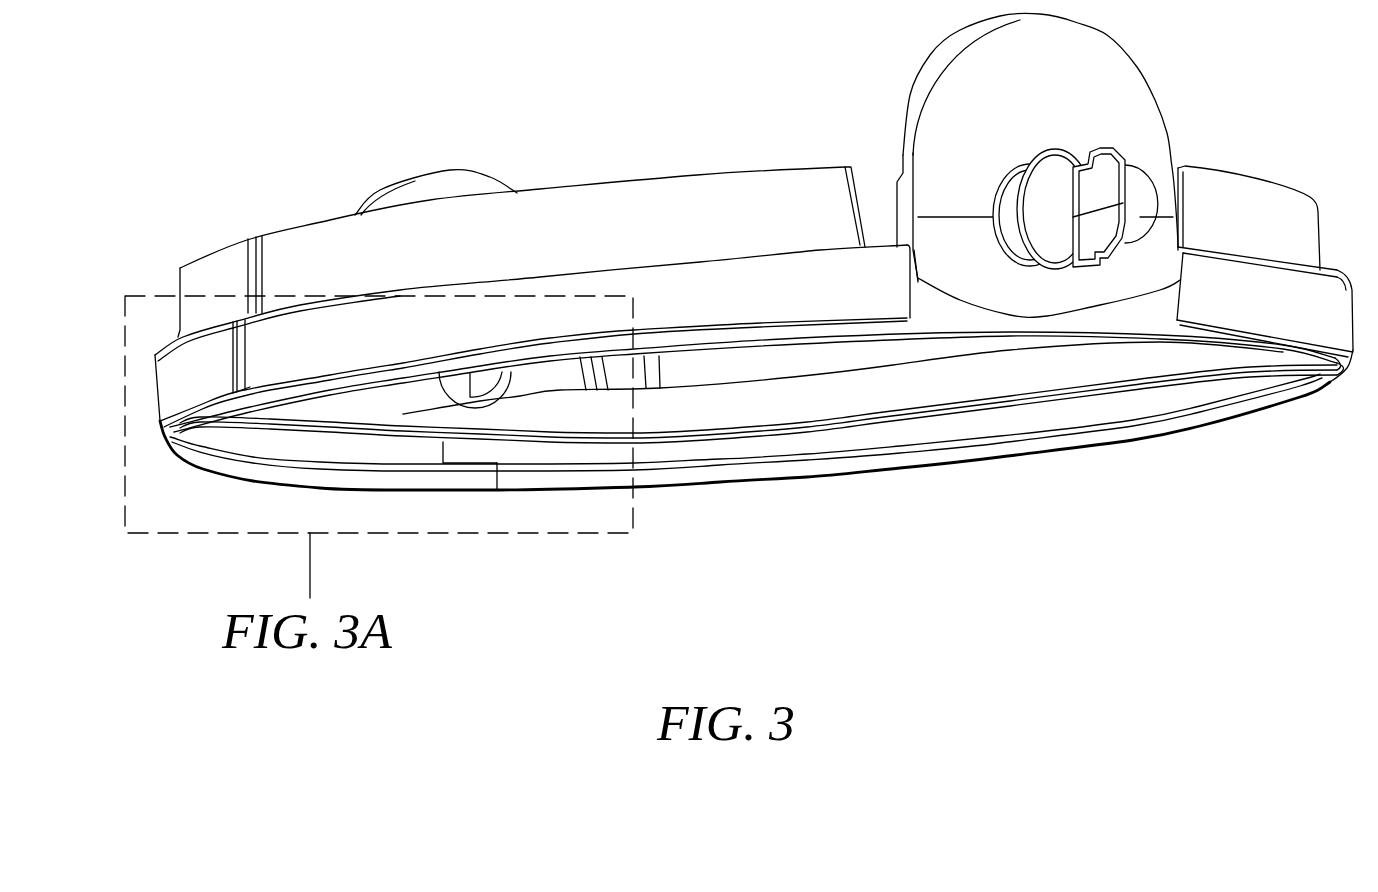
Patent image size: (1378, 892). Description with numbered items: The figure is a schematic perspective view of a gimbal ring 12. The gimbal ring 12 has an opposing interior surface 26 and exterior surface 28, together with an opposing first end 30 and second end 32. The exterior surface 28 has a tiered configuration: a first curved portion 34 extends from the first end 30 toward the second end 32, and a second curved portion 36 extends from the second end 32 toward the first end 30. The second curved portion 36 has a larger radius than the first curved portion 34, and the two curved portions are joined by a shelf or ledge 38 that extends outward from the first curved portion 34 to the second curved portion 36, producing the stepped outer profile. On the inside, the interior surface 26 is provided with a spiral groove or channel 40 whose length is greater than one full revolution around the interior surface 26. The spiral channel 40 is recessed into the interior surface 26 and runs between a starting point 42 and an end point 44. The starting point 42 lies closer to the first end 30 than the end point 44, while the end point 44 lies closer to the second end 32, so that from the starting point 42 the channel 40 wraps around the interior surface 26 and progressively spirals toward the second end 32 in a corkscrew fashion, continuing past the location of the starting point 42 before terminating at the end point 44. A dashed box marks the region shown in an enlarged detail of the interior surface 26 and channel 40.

The gimbal ring 12 is at (344, 84).
The interior surface 26 is at (1115, 367).
The exterior surface 28 is at (205, 262).
The first end 30 is at (697, 176).
The second end 32 is at (758, 483).
The first curved portion 34 is at (1237, 197).
The second curved portion 36 is at (1303, 313).
The ledge 38 is at (1330, 270).
The spiral channel 40 is at (812, 440).
The starting point 42 is at (445, 443).
The end point 44 is at (498, 468).